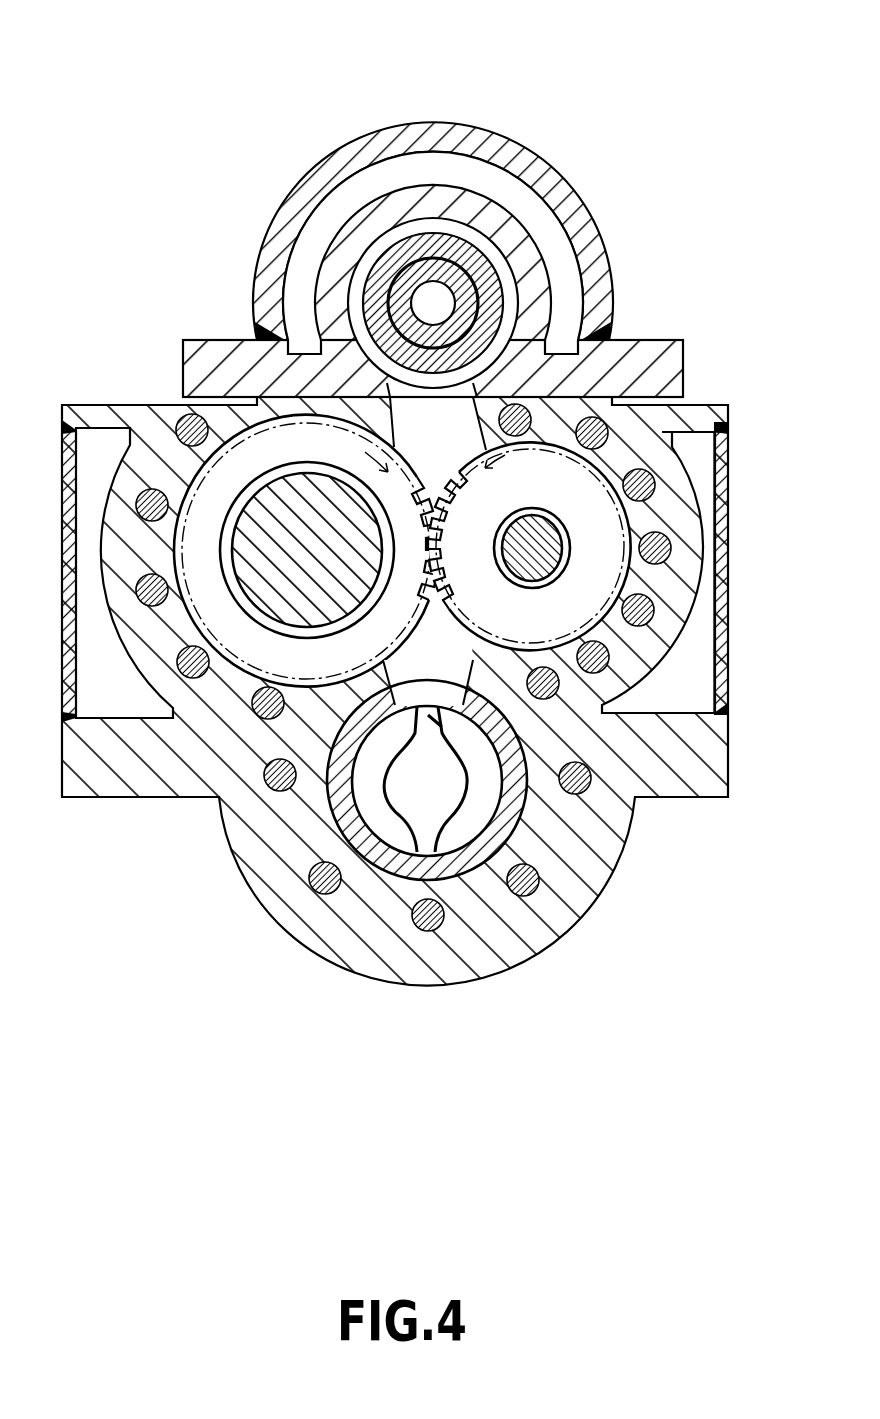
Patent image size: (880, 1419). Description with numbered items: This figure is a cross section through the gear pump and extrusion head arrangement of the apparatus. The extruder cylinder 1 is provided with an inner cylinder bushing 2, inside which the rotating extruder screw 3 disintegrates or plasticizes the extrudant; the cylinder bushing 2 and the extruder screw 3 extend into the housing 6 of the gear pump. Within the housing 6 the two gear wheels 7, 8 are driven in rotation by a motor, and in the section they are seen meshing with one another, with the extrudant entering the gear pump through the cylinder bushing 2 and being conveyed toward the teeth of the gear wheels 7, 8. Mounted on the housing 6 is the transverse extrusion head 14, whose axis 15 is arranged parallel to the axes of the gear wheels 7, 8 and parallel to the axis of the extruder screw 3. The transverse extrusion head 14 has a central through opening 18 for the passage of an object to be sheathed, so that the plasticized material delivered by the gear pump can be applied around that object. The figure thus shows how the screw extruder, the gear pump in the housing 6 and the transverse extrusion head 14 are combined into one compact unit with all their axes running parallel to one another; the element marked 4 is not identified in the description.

The cylinder 1 is at (287, 888).
The cylinder bushing 2 is at (373, 848).
The extruder screw 3 is at (435, 782).
The valve element 4 is at (480, 795).
The housing 6 is at (158, 625).
The gear wheel 7 is at (205, 512).
The gear wheel 8 is at (585, 503).
The transverse extrusion head 14 is at (337, 162).
The axis 15 is at (433, 303).
The central through opening 18 is at (445, 303).